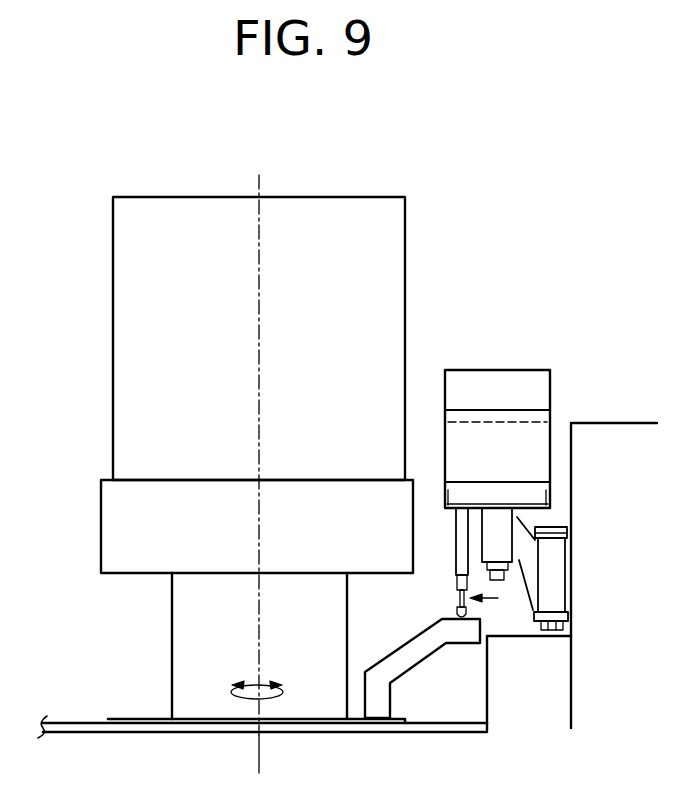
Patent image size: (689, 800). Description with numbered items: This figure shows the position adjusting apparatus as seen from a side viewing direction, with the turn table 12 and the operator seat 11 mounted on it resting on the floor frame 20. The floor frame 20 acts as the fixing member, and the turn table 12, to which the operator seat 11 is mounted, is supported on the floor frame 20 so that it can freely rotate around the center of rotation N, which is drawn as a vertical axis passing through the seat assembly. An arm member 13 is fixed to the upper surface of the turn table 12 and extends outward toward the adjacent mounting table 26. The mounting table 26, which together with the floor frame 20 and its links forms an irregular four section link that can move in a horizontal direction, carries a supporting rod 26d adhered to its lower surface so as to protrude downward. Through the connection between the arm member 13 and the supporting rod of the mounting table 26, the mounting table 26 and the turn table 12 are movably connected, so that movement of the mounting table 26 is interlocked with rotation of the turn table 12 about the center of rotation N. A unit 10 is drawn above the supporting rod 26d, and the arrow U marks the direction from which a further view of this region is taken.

The tool unit 10 is at (445, 450).
The operator seat 11 is at (100, 532).
The turn table 12 is at (123, 718).
The arm member 13 is at (372, 668).
The floor frame 20 is at (67, 722).
The mounting table 26 is at (537, 516).
The supporting rod 26d is at (453, 568).
The center of rotation N is at (254, 738).
The arrow U is at (498, 599).